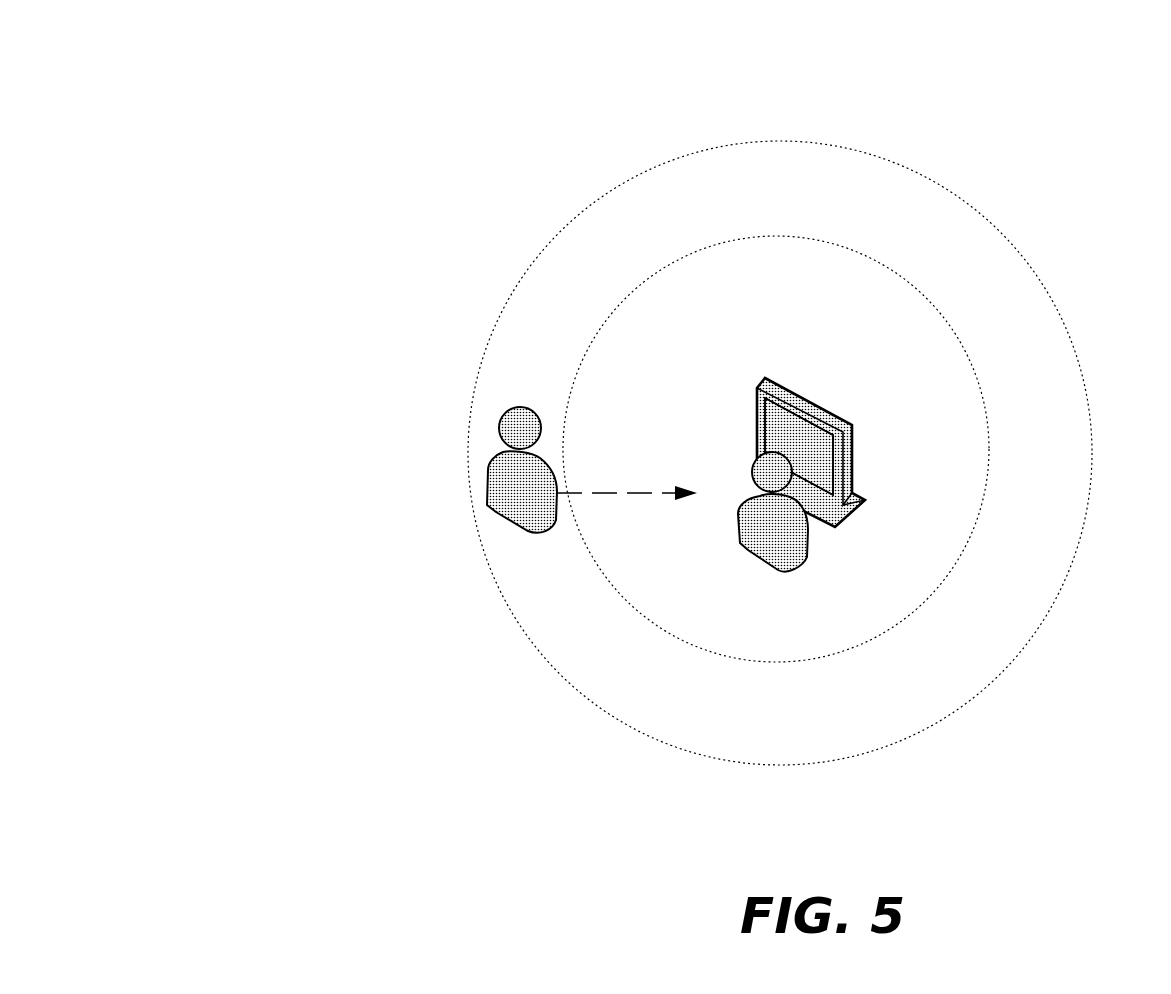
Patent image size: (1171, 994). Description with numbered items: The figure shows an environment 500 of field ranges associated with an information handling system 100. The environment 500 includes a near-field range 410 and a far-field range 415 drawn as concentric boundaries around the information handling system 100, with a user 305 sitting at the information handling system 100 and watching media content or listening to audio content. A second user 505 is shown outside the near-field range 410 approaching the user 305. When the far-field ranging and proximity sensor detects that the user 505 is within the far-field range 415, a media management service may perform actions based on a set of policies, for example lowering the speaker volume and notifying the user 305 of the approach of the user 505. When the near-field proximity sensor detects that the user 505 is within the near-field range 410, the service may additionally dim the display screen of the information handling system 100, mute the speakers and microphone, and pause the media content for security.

The environment 500 is at (306, 50).
The far-field range 415 is at (1080, 373).
The near-field range 410 is at (982, 412).
The user 505 is at (535, 535).
The information handling system 100 is at (853, 485).
The user 305 is at (808, 550).